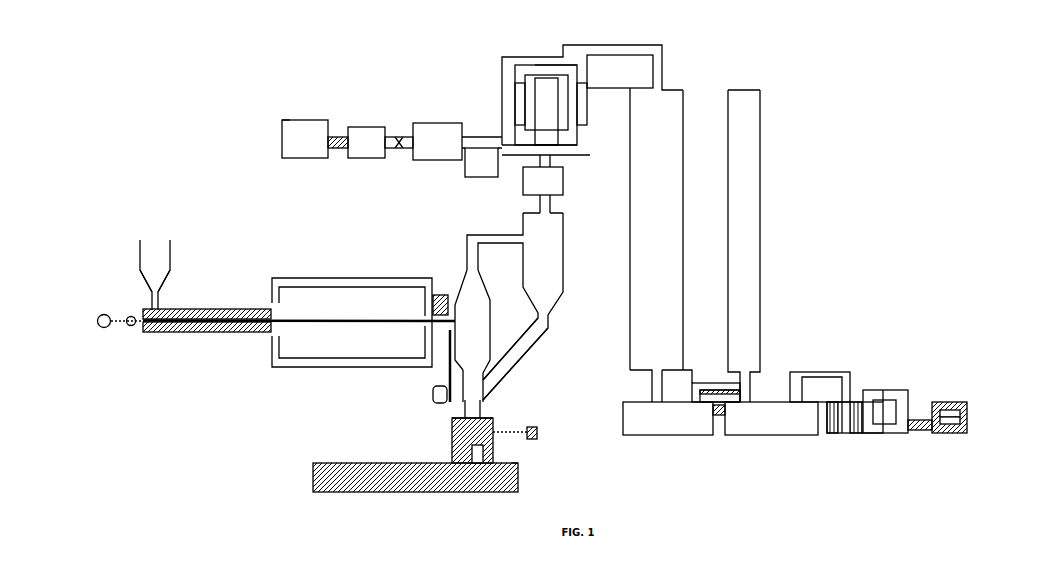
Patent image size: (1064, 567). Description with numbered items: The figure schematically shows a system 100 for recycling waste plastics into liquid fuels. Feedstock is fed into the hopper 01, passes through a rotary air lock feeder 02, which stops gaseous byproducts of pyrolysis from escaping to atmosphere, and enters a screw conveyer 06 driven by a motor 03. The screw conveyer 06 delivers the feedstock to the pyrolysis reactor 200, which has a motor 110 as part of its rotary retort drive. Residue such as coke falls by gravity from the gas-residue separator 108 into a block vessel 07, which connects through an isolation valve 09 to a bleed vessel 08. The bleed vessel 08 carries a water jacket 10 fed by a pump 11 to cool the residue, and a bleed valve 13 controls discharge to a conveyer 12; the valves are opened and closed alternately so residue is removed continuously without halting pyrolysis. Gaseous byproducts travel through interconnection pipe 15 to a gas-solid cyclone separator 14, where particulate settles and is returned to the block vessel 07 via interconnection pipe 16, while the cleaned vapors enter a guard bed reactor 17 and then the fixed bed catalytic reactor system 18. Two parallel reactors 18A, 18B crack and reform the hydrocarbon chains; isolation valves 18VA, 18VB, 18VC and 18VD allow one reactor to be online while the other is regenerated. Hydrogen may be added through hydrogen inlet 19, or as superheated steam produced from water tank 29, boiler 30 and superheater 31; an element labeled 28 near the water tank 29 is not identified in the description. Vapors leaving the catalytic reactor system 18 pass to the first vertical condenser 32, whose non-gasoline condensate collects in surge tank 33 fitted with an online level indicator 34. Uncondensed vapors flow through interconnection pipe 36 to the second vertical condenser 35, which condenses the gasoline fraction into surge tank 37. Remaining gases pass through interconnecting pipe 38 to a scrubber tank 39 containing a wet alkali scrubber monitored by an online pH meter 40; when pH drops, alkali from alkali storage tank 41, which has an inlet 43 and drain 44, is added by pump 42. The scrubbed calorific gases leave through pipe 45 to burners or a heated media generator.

The hopper 01 is at (138, 262).
The rotary air lock feeder 02 is at (150, 293).
The motor 03 is at (95, 321).
The screw conveyer 06 is at (176, 332).
The block vessel 07 is at (492, 402).
The bleed vessel 08 is at (455, 432).
The isolation valve 09 is at (495, 412).
The water jacket 10 is at (532, 461).
The pump 11 is at (535, 433).
The conveyer 12 is at (352, 465).
The bleed valve 13 is at (468, 455).
The gas-solid cyclone separator 14 is at (565, 260).
The interconnection pipe 15 is at (503, 235).
The interconnection pipe 16 is at (525, 360).
The guard bed reactor 17 is at (566, 188).
The fixed bed catalytic reactor system 18 is at (508, 88).
The reactor 18A is at (510, 110).
The reactor 18B is at (580, 112).
The isolation valve 18VA is at (528, 132).
The isolation valve 18VB is at (560, 140).
The isolation valve 18VC is at (537, 62).
The isolation valve 18VD is at (560, 62).
The hydrogen inlet 19 is at (470, 176).
The supply unit 28 is at (286, 115).
The water tank 29 is at (317, 158).
The boiler 30 is at (380, 158).
The superheater 31 is at (432, 122).
The first vertical condenser 32 is at (684, 92).
The surge tank 33 is at (670, 440).
The online level indicator 34 is at (622, 405).
The second vertical condenser 35 is at (762, 92).
The interconnection pipe 36 is at (700, 382).
The surge tank 37 is at (770, 440).
The interconnecting pipe 38 is at (794, 365).
The scrubber tank 39 is at (858, 440).
The online pH meter 40 is at (892, 438).
The alkali storage tank 41 is at (968, 432).
The pump 42 is at (930, 440).
The inlet 43 is at (968, 420).
The drain 44 is at (962, 440).
The pipe 45 is at (865, 392).
The system 100 is at (998, 128).
The gas-residue separator 108 is at (462, 288).
The motor 110 is at (434, 402).
The pyrolysis reactor 200 is at (352, 388).